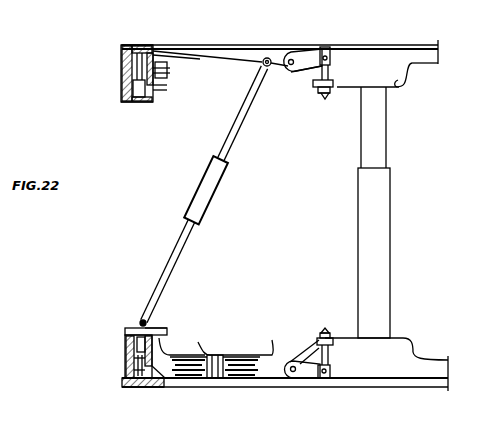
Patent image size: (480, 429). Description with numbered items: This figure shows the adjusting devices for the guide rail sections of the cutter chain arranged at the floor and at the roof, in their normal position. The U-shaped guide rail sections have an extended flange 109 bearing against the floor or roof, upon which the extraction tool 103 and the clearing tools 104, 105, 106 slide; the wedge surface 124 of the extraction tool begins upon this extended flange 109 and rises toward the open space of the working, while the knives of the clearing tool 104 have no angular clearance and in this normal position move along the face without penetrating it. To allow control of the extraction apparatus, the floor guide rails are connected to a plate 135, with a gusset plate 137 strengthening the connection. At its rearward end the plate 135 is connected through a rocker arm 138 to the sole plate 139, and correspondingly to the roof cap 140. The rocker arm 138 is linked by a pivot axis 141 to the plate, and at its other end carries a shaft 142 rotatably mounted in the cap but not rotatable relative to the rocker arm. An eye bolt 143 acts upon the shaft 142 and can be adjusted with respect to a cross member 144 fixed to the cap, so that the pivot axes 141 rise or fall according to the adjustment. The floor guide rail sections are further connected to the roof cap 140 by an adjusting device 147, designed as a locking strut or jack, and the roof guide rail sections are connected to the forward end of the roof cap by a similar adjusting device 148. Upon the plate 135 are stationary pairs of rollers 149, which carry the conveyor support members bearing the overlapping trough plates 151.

The extraction tool 103 is at (123, 76).
The clearing tool 104 is at (123, 354).
The clearing tool 105 is at (123, 362).
The clearing tool 106 is at (123, 368).
The extended flange 109 is at (140, 46).
The wedge surface 124 is at (128, 103).
The plate 135 is at (208, 380).
The gusset plate 137 is at (162, 46).
The rocker arm 138 is at (302, 52).
The sole plate 139 is at (403, 338).
The roof cap 140 is at (398, 80).
The pivot axis 141 is at (158, 92).
The shaft 142 is at (295, 72).
The eye bolt 143 is at (328, 93).
The cross member 144 is at (316, 88).
The adjusting device 147 is at (208, 189).
The adjusting device 148 is at (170, 70).
The pair of rollers 149 is at (200, 355).
The trough plate 151 is at (254, 355).